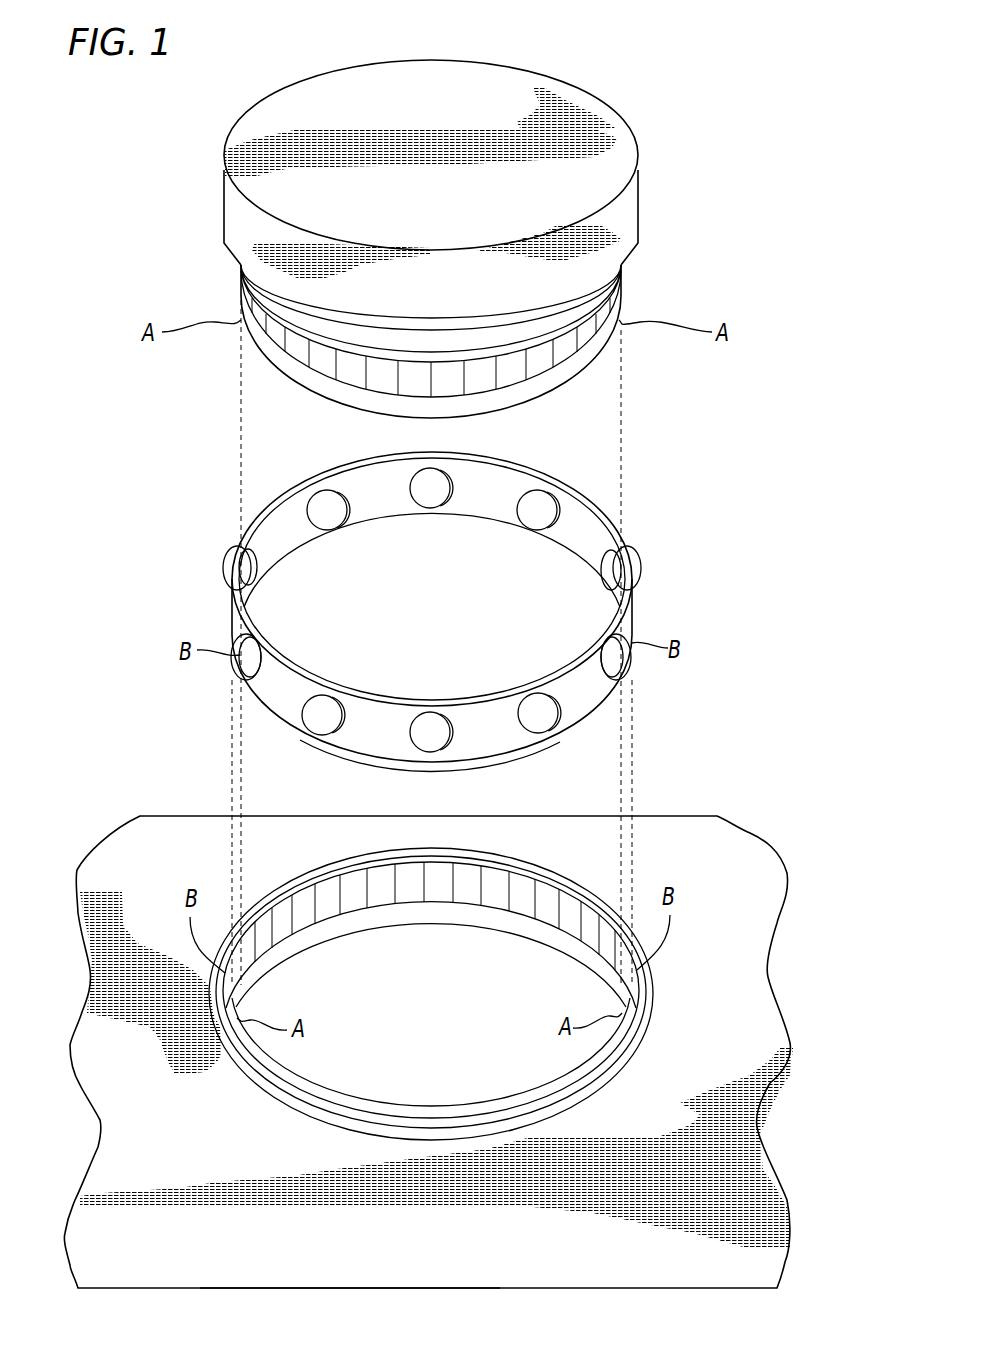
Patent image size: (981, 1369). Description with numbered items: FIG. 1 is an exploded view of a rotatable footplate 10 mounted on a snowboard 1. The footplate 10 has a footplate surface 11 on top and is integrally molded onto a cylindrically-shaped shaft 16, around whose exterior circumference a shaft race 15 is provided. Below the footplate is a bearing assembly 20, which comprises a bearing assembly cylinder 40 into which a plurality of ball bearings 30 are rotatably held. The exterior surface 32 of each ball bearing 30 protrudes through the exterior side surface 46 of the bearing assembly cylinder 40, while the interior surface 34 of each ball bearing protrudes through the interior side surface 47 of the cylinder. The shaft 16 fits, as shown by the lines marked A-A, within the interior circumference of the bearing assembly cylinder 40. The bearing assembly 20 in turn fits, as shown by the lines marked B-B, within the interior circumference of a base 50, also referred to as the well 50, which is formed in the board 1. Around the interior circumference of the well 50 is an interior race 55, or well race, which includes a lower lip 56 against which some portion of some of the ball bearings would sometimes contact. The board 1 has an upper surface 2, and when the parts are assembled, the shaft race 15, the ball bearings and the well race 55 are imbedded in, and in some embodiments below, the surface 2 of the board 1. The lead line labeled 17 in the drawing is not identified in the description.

The snowboard 1 is at (735, 855).
The upper surface 2 is at (162, 1148).
The rotatable footplate 10 is at (224, 196).
The footplate surface 11 is at (557, 124).
The shaft race 15 is at (277, 322).
The cylindrically-shaped shaft 16 is at (598, 349).
The skirt engagement rib 17 is at (527, 352).
The bearing assembly 20 is at (657, 562).
The ball bearings 30 is at (637, 552).
The exterior surface 32 is at (322, 718).
The interior surface 34 is at (605, 567).
The bearing assembly cylinder 40 is at (353, 466).
The exterior side surface 46 is at (487, 743).
The interior side surface 47 is at (373, 510).
The base 50 is at (287, 900).
The interior race 55 is at (450, 865).
The lower lip 56 is at (377, 893).